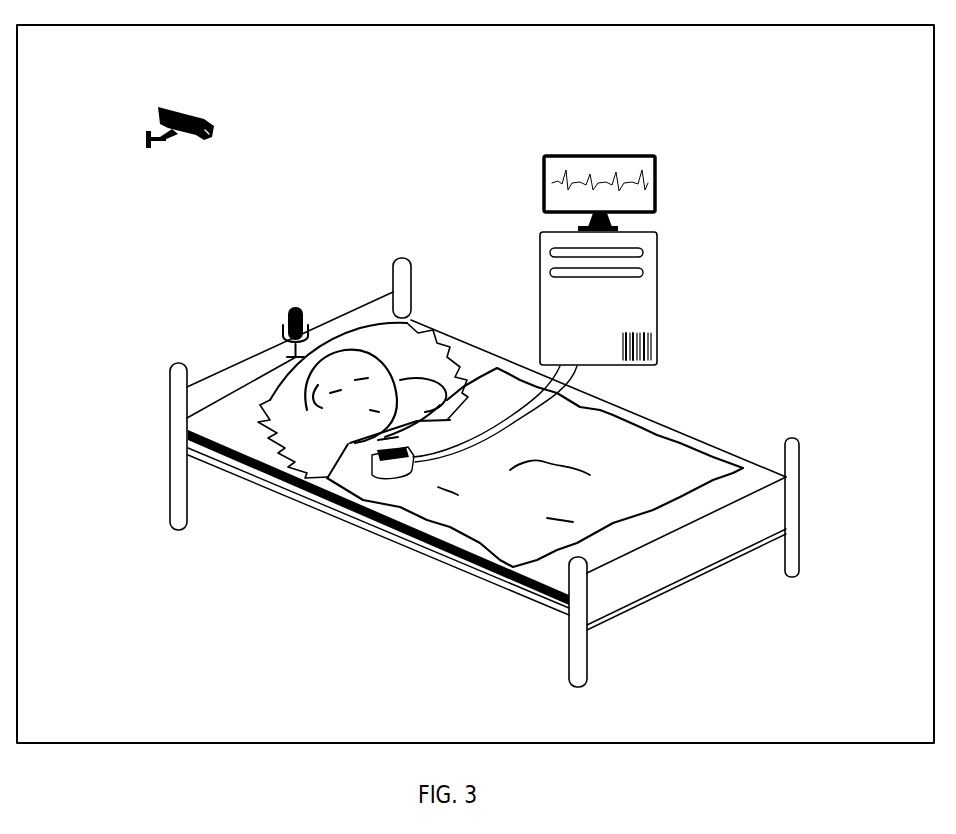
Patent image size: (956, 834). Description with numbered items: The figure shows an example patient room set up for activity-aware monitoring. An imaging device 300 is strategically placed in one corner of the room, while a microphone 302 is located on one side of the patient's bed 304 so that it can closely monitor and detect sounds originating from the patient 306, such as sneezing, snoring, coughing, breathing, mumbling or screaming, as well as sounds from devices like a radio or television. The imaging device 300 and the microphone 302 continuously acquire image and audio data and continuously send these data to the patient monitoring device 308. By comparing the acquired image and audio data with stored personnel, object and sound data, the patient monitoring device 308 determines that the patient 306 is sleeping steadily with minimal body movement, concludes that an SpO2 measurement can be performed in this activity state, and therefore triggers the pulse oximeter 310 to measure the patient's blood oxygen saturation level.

The imaging device 300 is at (212, 110).
The microphone 302 is at (283, 310).
The bed 304 is at (668, 432).
The patient 306 is at (323, 390).
The patient monitoring device 308 is at (647, 163).
The pulse oximeter 310 is at (377, 475).